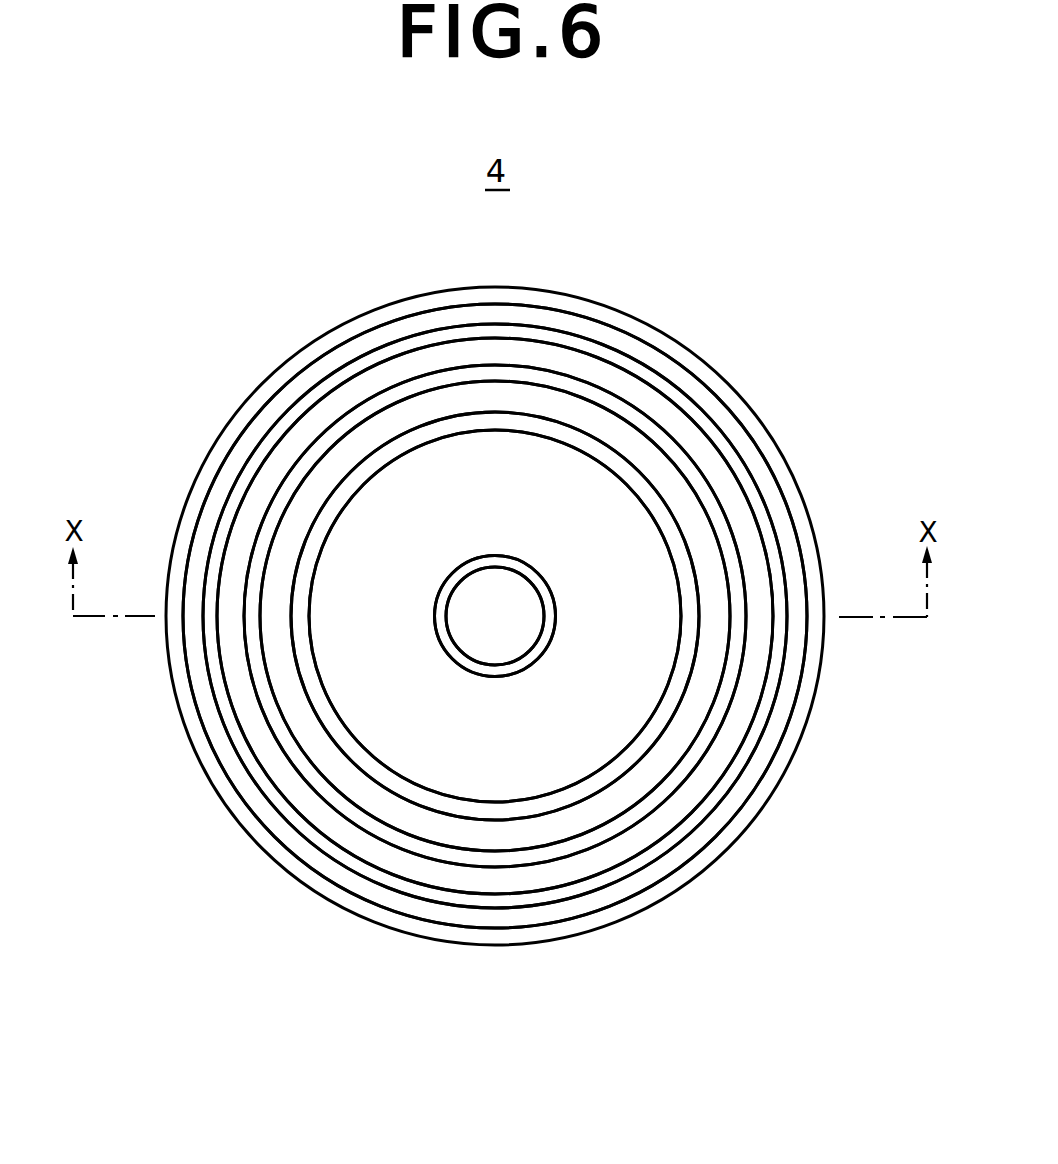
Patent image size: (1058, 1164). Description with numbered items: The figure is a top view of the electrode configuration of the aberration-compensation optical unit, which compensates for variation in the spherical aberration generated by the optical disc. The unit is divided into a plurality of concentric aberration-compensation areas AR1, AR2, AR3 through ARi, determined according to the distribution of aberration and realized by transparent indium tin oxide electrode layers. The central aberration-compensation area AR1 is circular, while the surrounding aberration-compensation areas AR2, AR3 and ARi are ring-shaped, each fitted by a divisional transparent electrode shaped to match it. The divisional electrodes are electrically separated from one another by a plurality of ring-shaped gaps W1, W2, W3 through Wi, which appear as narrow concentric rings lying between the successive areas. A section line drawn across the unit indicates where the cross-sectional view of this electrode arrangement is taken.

The aberration-compensation area AR1 is at (532, 620).
The aberration-compensation area AR2 is at (603, 483).
The aberration-compensation area AR3 is at (676, 483).
The aberration-compensation area ARi is at (765, 480).
The gap W1 is at (542, 588).
The gap W2 is at (687, 652).
The gap W3 is at (717, 717).
The gap Wi is at (730, 783).